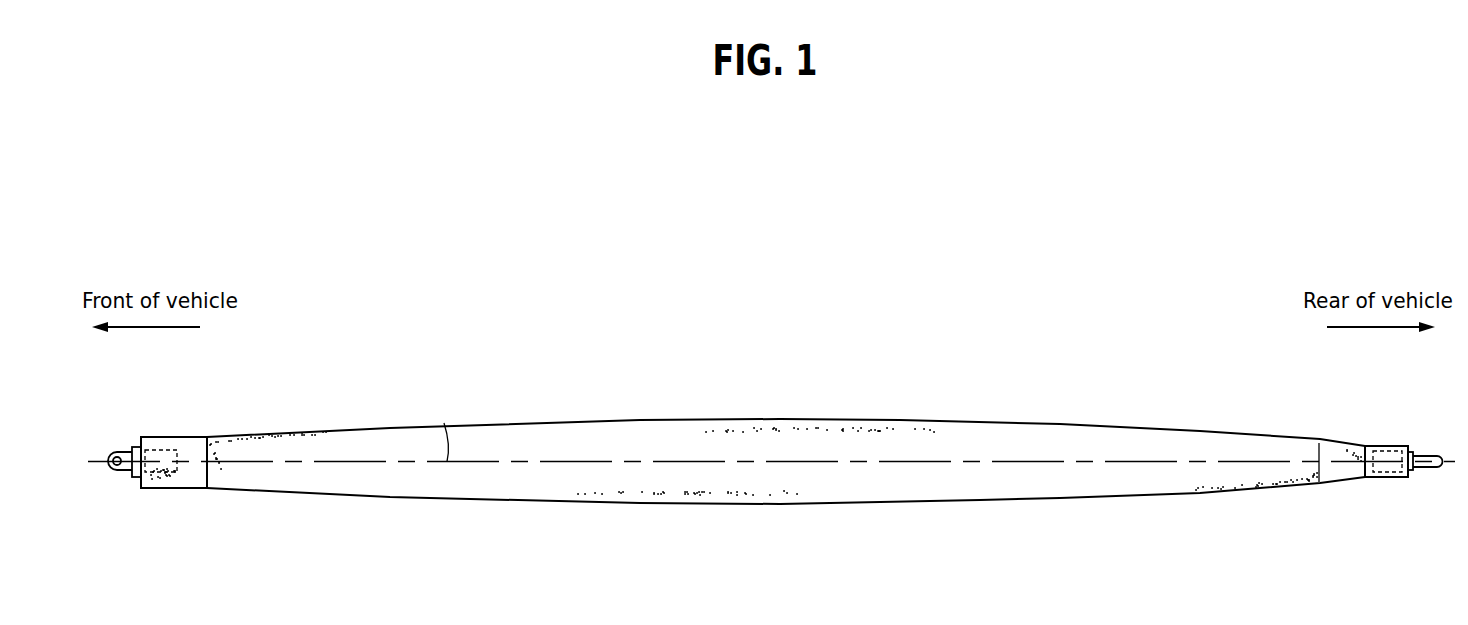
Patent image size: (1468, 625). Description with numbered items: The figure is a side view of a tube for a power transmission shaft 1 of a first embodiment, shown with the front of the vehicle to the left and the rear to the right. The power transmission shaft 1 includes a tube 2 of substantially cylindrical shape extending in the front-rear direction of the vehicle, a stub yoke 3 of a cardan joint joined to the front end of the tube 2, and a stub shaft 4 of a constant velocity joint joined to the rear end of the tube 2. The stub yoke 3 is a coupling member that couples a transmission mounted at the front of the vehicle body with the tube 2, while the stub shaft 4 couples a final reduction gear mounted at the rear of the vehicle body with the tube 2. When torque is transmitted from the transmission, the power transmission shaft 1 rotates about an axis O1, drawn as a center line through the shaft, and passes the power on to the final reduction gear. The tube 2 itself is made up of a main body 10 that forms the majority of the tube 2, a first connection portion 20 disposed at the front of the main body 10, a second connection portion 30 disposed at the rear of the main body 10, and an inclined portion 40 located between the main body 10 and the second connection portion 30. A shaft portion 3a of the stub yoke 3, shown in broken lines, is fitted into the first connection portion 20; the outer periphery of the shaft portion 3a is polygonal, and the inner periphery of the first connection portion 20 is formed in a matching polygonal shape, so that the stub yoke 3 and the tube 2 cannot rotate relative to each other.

The power transmission shaft 1 is at (771, 395).
The tube 2 is at (771, 435).
The stub yoke 3 is at (117, 451).
The shaft portion 3a is at (163, 450).
The stub shaft 4 is at (1427, 460).
The main body 10 is at (977, 493).
The first connection portion 20 is at (190, 478).
The second connection portion 30 is at (1387, 477).
The inclined portion 40 is at (1335, 465).
The axis O1 is at (437, 410).